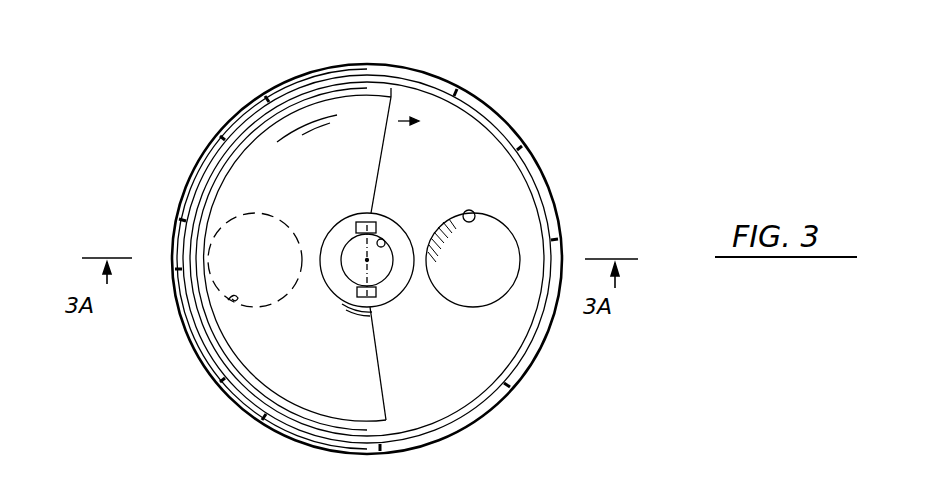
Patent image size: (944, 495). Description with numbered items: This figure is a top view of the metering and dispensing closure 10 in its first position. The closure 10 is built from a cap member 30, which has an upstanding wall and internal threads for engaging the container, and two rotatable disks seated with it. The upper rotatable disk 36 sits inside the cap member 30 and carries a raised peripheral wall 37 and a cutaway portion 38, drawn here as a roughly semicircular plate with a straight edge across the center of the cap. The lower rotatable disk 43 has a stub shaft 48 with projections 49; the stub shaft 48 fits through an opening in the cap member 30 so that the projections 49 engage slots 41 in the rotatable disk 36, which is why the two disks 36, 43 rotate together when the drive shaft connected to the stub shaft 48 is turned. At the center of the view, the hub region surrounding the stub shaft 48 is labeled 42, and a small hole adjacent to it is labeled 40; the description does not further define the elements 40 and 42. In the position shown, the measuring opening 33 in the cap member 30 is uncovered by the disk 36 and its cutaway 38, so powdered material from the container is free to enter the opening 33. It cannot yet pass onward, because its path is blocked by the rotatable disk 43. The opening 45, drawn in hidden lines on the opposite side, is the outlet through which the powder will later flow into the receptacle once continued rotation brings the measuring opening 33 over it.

The metering and dispensing closure 10 is at (158, 178).
The cap member 30 is at (475, 101).
The measuring opening 33 is at (470, 213).
The rotatable disk 36 is at (277, 115).
The raised peripheral wall 37 is at (314, 100).
The cutaway portion 38 is at (383, 152).
The pin hole 40 is at (384, 240).
The slots 41 is at (366, 223).
The hub 42 is at (394, 292).
The rotatable disk 43 is at (506, 384).
The opening 45 is at (232, 297).
The stub shaft 48 is at (353, 273).
The projections 49 is at (368, 298).